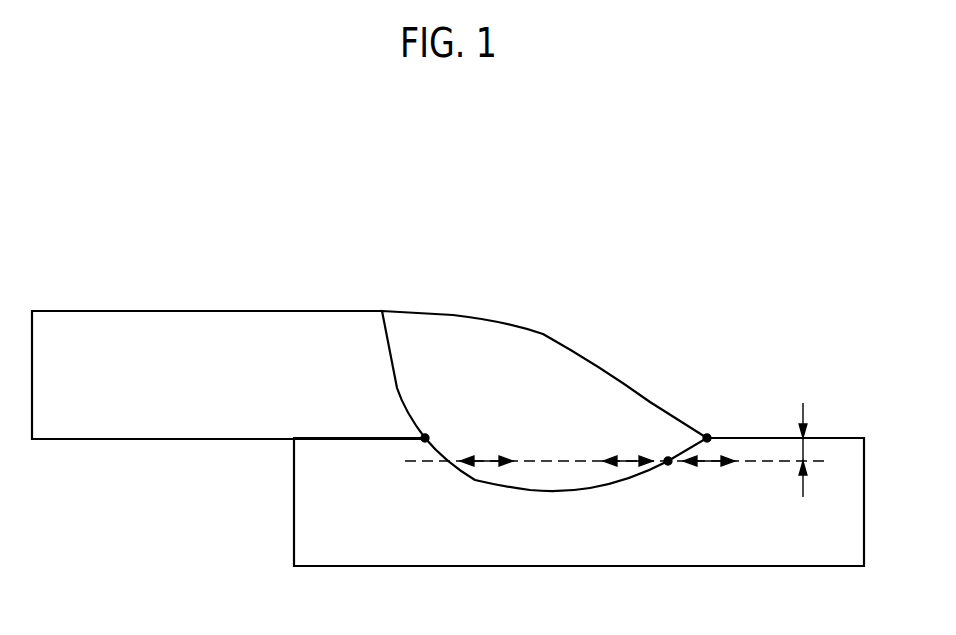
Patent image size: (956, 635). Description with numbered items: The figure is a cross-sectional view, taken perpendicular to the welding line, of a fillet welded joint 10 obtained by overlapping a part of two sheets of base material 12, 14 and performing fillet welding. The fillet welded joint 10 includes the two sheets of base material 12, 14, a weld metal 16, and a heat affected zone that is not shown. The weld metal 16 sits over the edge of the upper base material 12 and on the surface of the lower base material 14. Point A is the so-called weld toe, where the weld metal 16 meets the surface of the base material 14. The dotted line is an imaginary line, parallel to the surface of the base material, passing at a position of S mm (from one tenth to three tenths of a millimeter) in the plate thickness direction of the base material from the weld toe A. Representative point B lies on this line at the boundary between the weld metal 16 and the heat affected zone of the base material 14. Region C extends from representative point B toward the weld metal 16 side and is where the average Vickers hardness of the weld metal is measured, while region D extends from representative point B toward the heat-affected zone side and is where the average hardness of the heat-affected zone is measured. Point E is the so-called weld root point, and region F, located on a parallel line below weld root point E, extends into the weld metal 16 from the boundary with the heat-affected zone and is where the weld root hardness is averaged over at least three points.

The fillet welded joint 10 is at (133, 250).
The base material 12 is at (151, 394).
The base material 14 is at (367, 531).
The weld metal 16 is at (527, 406).
The weld toe A is at (708, 434).
The representative point B is at (668, 467).
The region C is at (628, 457).
The region D is at (709, 467).
The weld root point E is at (422, 442).
The region F is at (489, 465).
The distance in plate thickness direction S is at (804, 449).